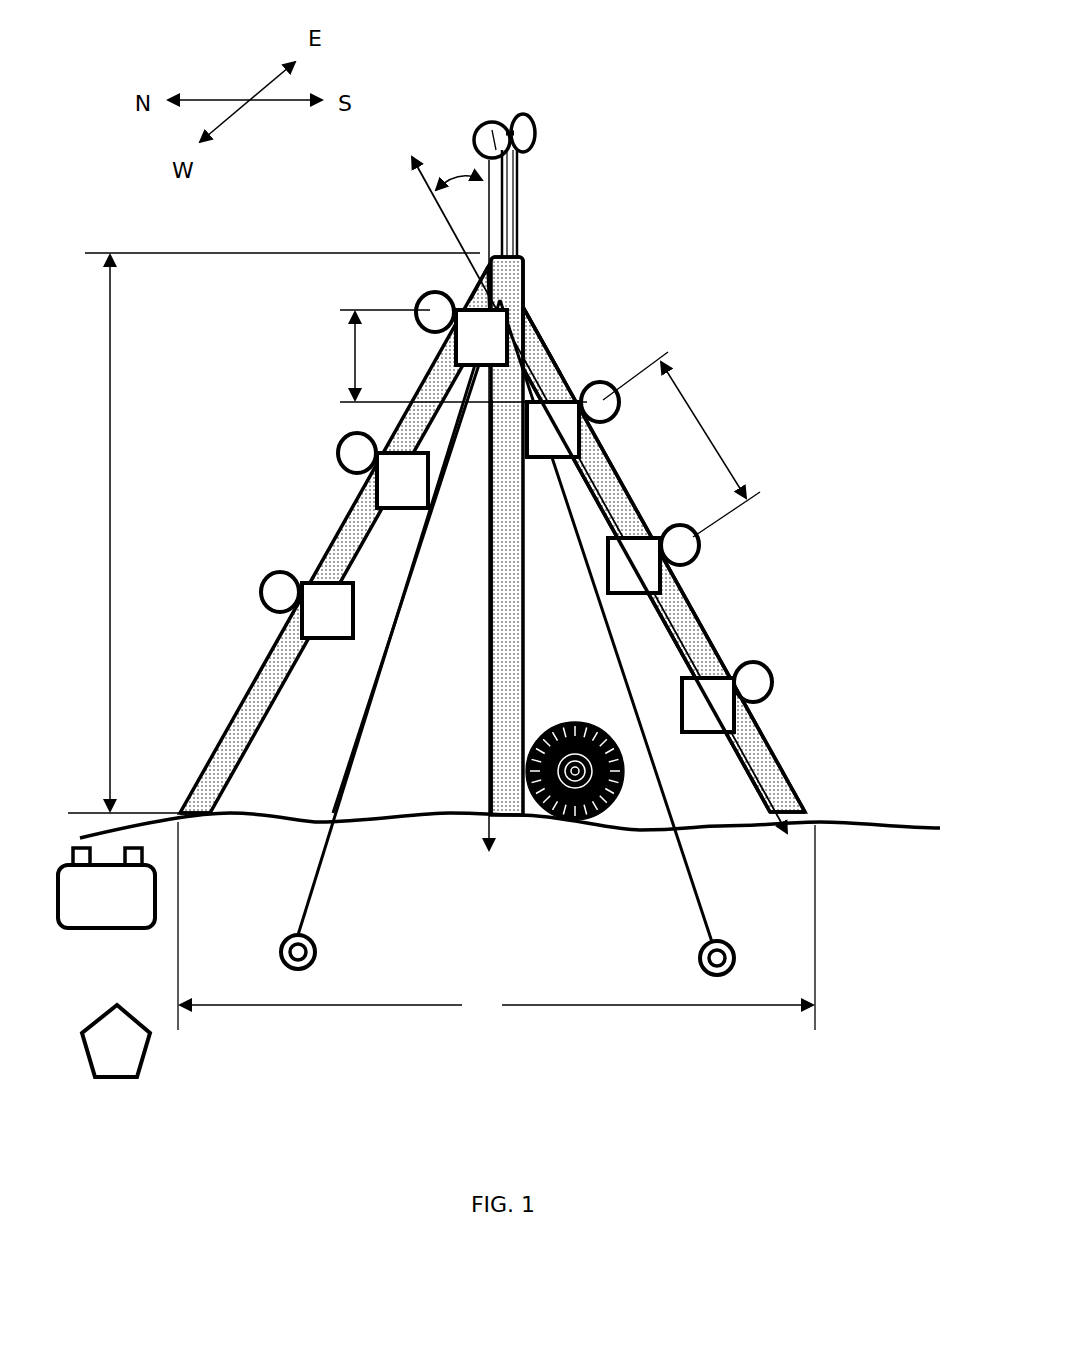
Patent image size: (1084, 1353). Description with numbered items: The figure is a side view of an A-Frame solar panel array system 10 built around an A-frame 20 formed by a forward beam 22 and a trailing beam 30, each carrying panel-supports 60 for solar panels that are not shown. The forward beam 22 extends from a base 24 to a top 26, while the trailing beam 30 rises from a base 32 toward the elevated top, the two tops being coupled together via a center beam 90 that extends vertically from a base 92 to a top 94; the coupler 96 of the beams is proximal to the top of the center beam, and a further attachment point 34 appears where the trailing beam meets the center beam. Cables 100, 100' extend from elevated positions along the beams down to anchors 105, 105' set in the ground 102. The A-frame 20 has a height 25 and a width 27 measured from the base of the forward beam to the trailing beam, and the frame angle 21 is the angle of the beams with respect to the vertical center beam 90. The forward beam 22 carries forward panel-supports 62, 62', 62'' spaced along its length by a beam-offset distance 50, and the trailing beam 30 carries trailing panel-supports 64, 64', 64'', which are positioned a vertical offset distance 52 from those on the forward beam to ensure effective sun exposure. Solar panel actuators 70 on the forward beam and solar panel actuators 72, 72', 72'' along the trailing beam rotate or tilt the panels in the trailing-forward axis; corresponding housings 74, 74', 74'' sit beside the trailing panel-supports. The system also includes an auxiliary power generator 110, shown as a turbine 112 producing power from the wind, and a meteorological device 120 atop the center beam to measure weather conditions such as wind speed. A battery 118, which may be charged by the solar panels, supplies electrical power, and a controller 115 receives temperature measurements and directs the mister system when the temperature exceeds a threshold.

The A-Frame solar panel array system 10 is at (749, 215).
The A-frame 20 is at (500, 670).
The frame angle 21 is at (440, 190).
The forward beam 22 is at (700, 632).
The base 24 is at (805, 800).
The height 25 is at (274, 533).
The top 26 is at (535, 338).
The width 27 is at (496, 926).
The trailing beam 30 is at (265, 690).
The base 32 is at (190, 800).
The leg attachment 34 is at (488, 290).
The beam-offset distance 50 is at (681, 444).
The vertical offset distance 52 is at (348, 325).
The panel-supports 60 is at (770, 688).
The forward panel-support 62 is at (707, 559).
The forward panel-support 62' is at (745, 557).
The forward panel-support 62'' is at (616, 365).
The trailing panel-support 64 is at (226, 559).
The trailing panel-support 64' is at (303, 414).
The trailing panel-support 64'' is at (394, 294).
The solar panel actuator 70 is at (707, 720).
The solar panel actuator 72 is at (646, 590).
The solar panel actuator 72' is at (602, 574).
The solar panel actuator 72'' is at (590, 431).
The sensor housing 74 is at (374, 619).
The sensor housing 74' is at (432, 483).
The sensor housing 74'' is at (438, 351).
The center beam 90 is at (497, 735).
The base 92 is at (517, 817).
The top 94 is at (520, 255).
The coupler 96 is at (525, 292).
The cable 100 is at (351, 622).
The cable 100' is at (646, 621).
The ground 102 is at (313, 826).
The anchor 105 is at (343, 937).
The anchor 105' is at (663, 960).
The auxiliary power generator 110 is at (575, 820).
The turbine 112 is at (600, 812).
The controller 115 is at (130, 1068).
The battery 118 is at (108, 910).
The meteorological device 120 is at (487, 128).